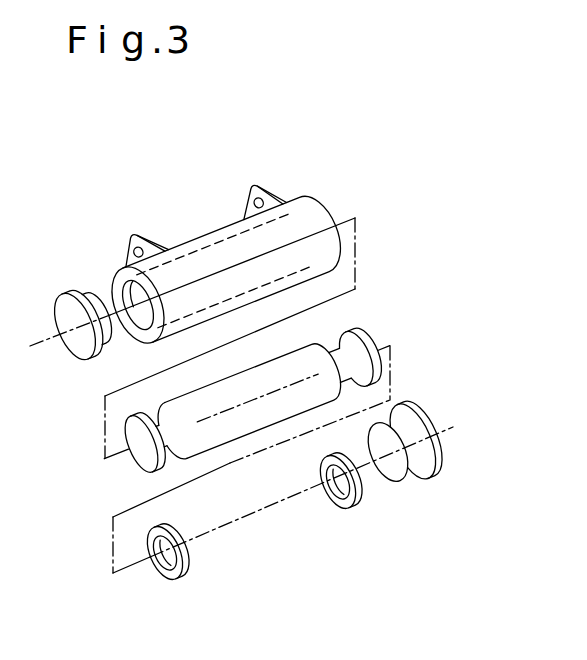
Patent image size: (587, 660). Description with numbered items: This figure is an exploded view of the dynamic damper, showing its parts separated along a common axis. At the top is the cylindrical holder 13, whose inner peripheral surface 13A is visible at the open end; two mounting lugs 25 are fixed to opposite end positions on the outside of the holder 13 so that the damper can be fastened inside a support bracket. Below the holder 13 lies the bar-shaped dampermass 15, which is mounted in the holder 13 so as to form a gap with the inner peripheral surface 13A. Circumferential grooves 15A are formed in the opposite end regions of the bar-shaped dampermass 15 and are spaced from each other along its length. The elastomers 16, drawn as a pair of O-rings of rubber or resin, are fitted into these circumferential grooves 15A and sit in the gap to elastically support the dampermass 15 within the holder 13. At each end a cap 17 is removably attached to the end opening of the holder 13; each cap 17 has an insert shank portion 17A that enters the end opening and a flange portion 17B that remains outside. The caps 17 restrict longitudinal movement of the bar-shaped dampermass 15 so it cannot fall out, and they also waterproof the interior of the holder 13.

The cylindrical holder 13 is at (200, 237).
The inner peripheral surface 13A is at (125, 296).
The mounting lugs 25 is at (134, 238).
The bar-shaped dampermass 15 is at (242, 420).
The circumferential grooves 15A is at (341, 330).
The elastomers 16 is at (172, 578).
The caps 17 is at (82, 344).
The insert shank portion 17A is at (407, 481).
The flange portion 17B is at (423, 407).